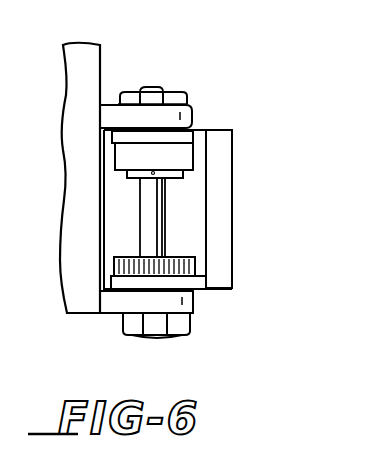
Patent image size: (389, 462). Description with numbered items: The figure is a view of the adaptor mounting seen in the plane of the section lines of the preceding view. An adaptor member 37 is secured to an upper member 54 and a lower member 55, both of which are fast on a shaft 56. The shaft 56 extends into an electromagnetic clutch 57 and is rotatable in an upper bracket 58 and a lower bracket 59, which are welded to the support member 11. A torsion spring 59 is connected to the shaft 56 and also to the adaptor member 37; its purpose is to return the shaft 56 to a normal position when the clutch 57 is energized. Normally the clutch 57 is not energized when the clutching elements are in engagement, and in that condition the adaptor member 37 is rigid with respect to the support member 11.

The support member 11 is at (72, 290).
The adaptor member 37 is at (212, 145).
The upper member 54 is at (188, 137).
The lower member 55 is at (200, 281).
The shaft 56 is at (158, 235).
The electromagnetic clutch 57 is at (165, 153).
The upper bracket 58 is at (125, 116).
The lower bracket 59 is at (190, 266).